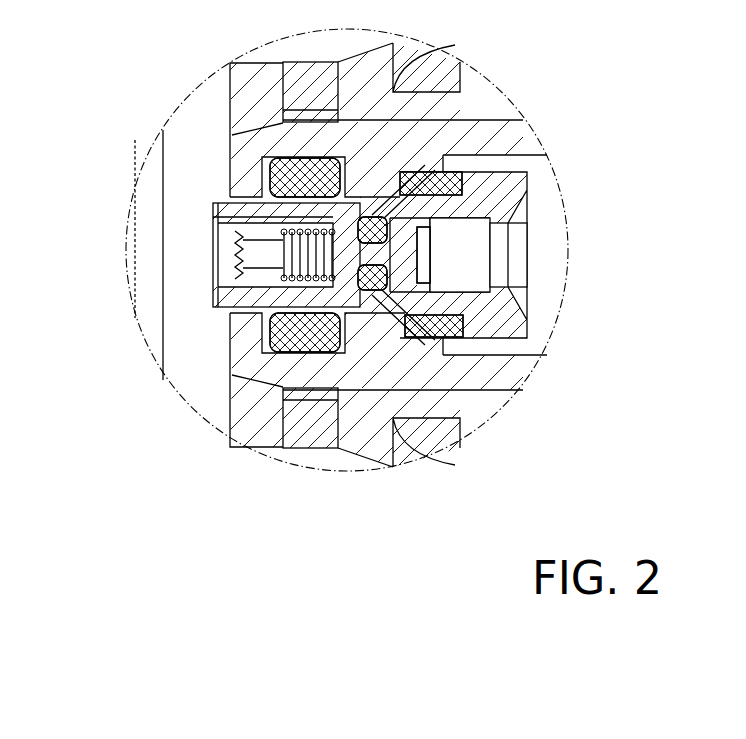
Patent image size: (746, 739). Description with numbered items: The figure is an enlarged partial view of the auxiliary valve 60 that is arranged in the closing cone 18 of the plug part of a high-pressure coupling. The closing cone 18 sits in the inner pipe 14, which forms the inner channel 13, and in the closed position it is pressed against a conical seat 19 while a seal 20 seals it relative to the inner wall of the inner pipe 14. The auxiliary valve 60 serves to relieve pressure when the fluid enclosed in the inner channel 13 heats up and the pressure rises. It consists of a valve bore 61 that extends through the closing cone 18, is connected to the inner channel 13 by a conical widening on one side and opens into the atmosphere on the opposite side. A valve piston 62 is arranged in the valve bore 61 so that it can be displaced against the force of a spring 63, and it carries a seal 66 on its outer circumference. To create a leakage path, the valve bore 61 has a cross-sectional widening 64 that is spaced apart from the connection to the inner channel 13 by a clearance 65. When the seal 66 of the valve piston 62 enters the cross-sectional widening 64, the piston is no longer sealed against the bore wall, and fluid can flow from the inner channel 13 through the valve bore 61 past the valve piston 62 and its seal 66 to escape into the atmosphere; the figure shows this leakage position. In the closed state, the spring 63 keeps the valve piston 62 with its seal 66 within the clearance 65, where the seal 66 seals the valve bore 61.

The inner channel 13 is at (500, 238).
The inner pipe 14 is at (418, 255).
The closing cone 18 is at (515, 335).
The conical seat 19 is at (405, 104).
The seal 20 is at (489, 133).
The auxiliary valve 60 is at (232, 318).
The valve bore 61 is at (563, 255).
The valve piston 62 is at (490, 336).
The spring 63 is at (226, 331).
The cross-sectional widening 64 is at (453, 379).
The clearance 65 is at (527, 211).
The seal 66 is at (532, 94).